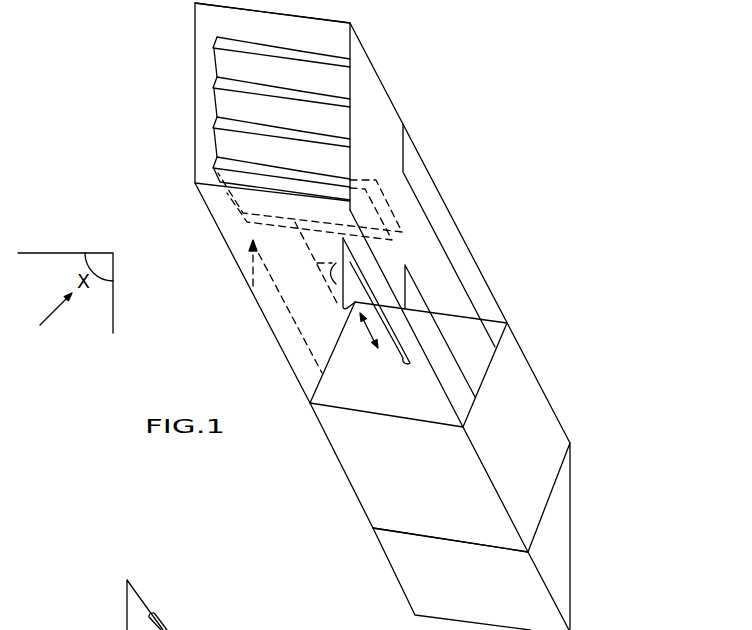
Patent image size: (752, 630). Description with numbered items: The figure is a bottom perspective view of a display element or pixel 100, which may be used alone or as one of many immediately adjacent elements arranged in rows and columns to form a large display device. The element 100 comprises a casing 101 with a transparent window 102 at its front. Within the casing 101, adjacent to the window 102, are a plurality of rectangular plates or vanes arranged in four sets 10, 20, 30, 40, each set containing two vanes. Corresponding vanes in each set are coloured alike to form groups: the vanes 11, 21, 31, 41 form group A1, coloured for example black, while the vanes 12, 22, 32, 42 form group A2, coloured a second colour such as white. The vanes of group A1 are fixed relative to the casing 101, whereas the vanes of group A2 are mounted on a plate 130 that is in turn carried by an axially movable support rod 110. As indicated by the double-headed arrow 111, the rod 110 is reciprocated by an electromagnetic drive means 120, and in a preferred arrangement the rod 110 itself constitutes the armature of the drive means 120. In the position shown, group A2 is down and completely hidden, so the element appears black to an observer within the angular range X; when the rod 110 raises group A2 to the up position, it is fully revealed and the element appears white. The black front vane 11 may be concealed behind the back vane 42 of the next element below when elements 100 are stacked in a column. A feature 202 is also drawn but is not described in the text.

The first set of vanes 10 is at (205, 163).
The black front vane 11 is at (345, 196).
The vane of group A2 12 is at (352, 183).
The second set of vanes 20 is at (205, 125).
The vane of group A1 21 is at (345, 165).
The vane of group A2 22 is at (345, 146).
The third set of vanes 30 is at (205, 83).
The vane of group A1 31 is at (345, 122).
The vane of group A2 32 is at (345, 102).
The fourth set of vanes 40 is at (205, 42).
The vane of group A1 41 is at (345, 83).
The back vane 42 is at (345, 60).
The display element 100 is at (585, 323).
The casing 101 is at (475, 258).
The transparent window 102 is at (345, 35).
The support rod 110 is at (396, 352).
The double-headed arrow 111 is at (367, 335).
The electromagnetic drive means 120 is at (547, 432).
The plate 130 is at (337, 278).
The guide rail 202 is at (125, 608).